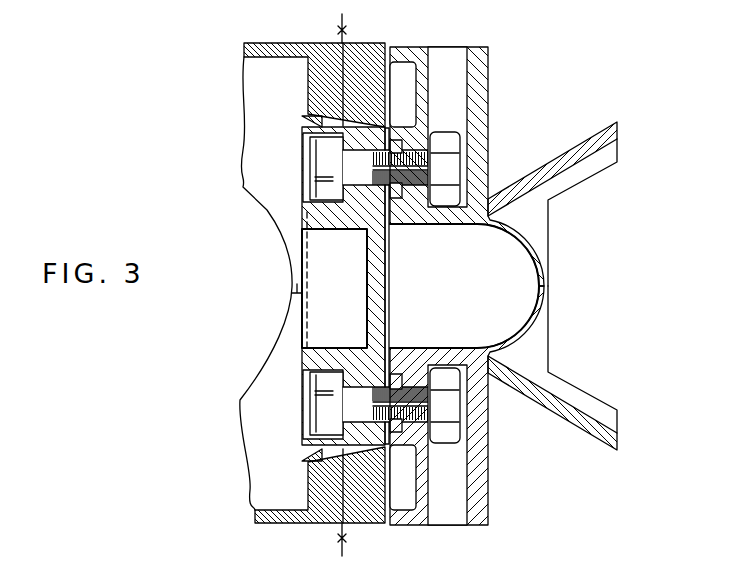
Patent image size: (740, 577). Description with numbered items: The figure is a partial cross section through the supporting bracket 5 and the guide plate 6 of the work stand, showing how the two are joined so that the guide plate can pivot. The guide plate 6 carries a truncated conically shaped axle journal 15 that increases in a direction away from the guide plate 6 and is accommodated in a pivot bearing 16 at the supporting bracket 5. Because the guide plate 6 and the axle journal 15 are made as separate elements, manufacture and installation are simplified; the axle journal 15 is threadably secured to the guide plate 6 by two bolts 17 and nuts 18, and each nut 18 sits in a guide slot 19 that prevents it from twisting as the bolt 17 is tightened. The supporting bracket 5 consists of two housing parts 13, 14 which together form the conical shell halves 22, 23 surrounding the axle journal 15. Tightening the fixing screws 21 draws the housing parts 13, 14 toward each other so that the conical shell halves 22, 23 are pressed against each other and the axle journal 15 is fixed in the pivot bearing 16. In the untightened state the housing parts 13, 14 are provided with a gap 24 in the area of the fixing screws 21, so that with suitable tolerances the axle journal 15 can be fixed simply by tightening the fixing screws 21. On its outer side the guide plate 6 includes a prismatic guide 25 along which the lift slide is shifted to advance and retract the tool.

The supporting bracket 5 is at (371, 43).
The guide plate 6 is at (480, 110).
The housing part 13 is at (328, 63).
The housing part 14 is at (327, 487).
The axle journal 15 is at (320, 362).
The pivot bearing 16 is at (314, 120).
The bolt 17 is at (317, 185).
The nut 18 is at (438, 137).
The guide slot 19 is at (452, 92).
The fixing screw 21 is at (343, 85).
The conical shell half 22 is at (342, 140).
The conical shell half 23 is at (318, 452).
The gap 24 is at (298, 287).
The prismatic guide 25 is at (540, 173).